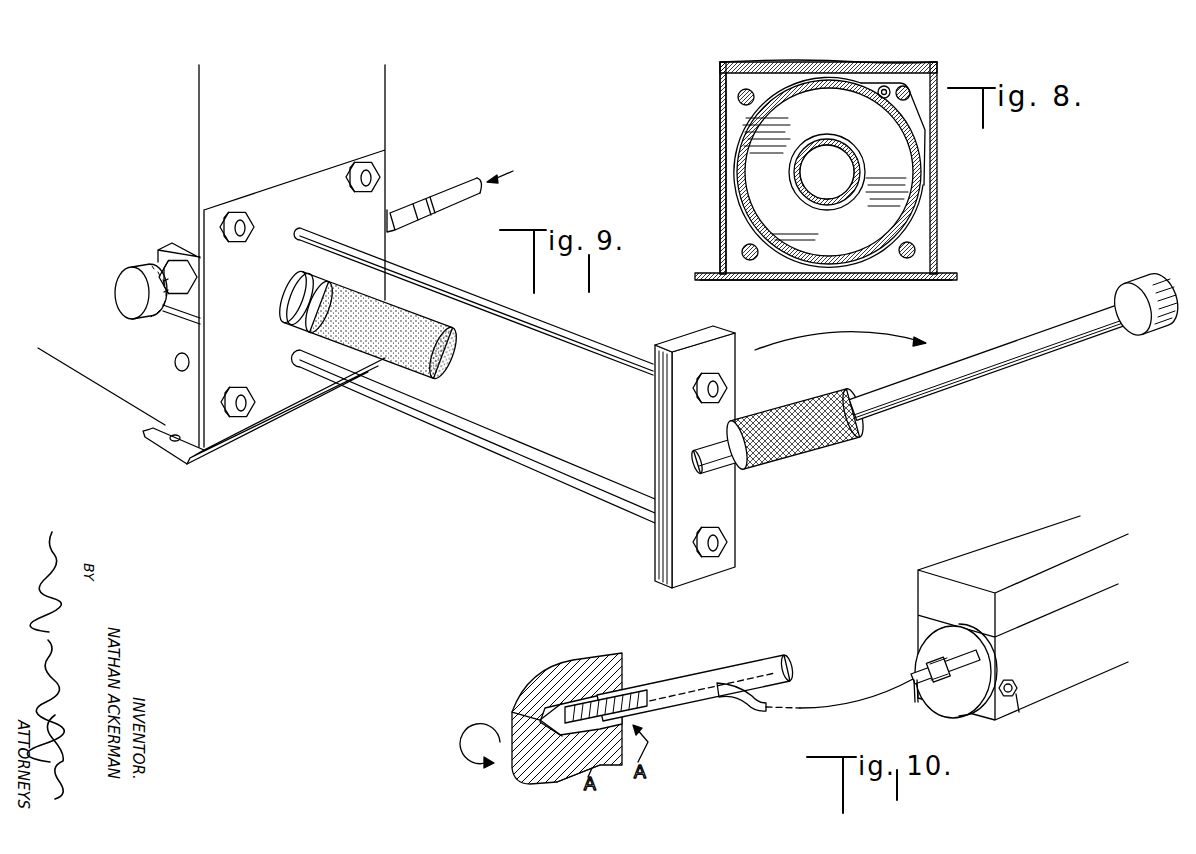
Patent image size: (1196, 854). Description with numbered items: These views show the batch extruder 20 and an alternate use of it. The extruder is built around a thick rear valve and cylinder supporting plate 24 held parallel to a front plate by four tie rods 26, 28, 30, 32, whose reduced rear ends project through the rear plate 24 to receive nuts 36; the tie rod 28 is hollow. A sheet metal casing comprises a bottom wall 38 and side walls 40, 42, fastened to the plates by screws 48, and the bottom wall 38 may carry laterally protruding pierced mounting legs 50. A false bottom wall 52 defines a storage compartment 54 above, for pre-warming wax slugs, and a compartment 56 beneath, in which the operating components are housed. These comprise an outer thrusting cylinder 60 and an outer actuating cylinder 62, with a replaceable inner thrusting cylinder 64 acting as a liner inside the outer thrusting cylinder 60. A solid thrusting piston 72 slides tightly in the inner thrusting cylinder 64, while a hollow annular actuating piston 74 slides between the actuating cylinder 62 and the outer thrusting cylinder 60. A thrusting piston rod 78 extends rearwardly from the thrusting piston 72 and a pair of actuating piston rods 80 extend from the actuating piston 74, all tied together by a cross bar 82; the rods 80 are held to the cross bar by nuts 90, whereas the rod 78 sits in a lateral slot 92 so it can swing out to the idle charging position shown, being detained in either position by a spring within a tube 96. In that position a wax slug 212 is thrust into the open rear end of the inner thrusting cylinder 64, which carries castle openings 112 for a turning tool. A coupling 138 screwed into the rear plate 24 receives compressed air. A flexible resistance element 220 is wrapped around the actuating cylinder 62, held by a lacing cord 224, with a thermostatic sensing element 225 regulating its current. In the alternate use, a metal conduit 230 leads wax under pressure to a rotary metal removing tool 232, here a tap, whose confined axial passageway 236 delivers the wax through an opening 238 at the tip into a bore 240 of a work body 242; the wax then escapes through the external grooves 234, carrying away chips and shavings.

In FIG. 10, the batch extruder 20 is at (1048, 522).
In FIG. 9, the rear valve and cylinder supporting plate 24 is at (272, 402).
In FIG. 8, the tie rod 26 is at (738, 97).
In FIG. 8, the tie rod 28 is at (911, 90).
In FIG. 8, the tie rod 30 is at (742, 252).
In FIG. 8, the tie rod 32 is at (916, 248).
In FIG. 9, the nuts 36 is at (382, 173).
In FIG. 8, the bottom wall 38 is at (893, 279).
In FIG. 8, the side wall 40 is at (940, 177).
In FIG. 8, the side wall 42 is at (722, 182).
In FIG. 9, the screws 48 is at (175, 361).
In FIG. 9, the mounting legs 50 is at (143, 432).
In FIG. 8, the false bottom wall 52 is at (908, 64).
In FIG. 8, the storage compartment 54 is at (740, 63).
In FIG. 8, the compartment 56 is at (735, 222).
In FIG. 8, the outer thrusting cylinder 60 is at (860, 166).
In FIG. 8, the outer actuating cylinder 62 is at (836, 82).
In FIG. 8, the inner thrusting cylinder 64 is at (793, 183).
In FIG. 9, the inner thrusting cylinder 64 is at (286, 312).
In FIG. 8, the thrusting piston 72 is at (823, 188).
In FIG. 8, the actuating piston 74 is at (830, 255).
In FIG. 9, the thrusting piston rod 78 is at (999, 366).
In FIG. 9, the actuating piston rods 80 is at (611, 353).
In FIG. 9, the cross bar 82 is at (728, 518).
In FIG. 9, the nuts 90 is at (720, 379).
In FIG. 9, the slot 92 is at (720, 442).
In FIG. 9, the tube 96 is at (845, 438).
In FIG. 9, the castle openings 112 is at (308, 277).
In FIG. 9, the coupling 138 is at (404, 226).
In FIG. 9, the wax slug 212 is at (455, 366).
In FIG. 8, the flexible resistance element 220 is at (912, 220).
In FIG. 8, the lacing cord 224 is at (930, 130).
In FIG. 8, the thermostatic sensing element 225 is at (882, 86).
In FIG. 10, the metal conduit 230 is at (853, 709).
In FIG. 10, the rotary type metal removing tool 232 is at (712, 667).
In FIG. 10, the grooves 234 is at (635, 688).
In FIG. 10, the passageway 236 is at (676, 720).
In FIG. 10, the opening 238 is at (557, 783).
In FIG. 10, the bore 240 is at (537, 717).
In FIG. 10, the work body 242 is at (573, 663).